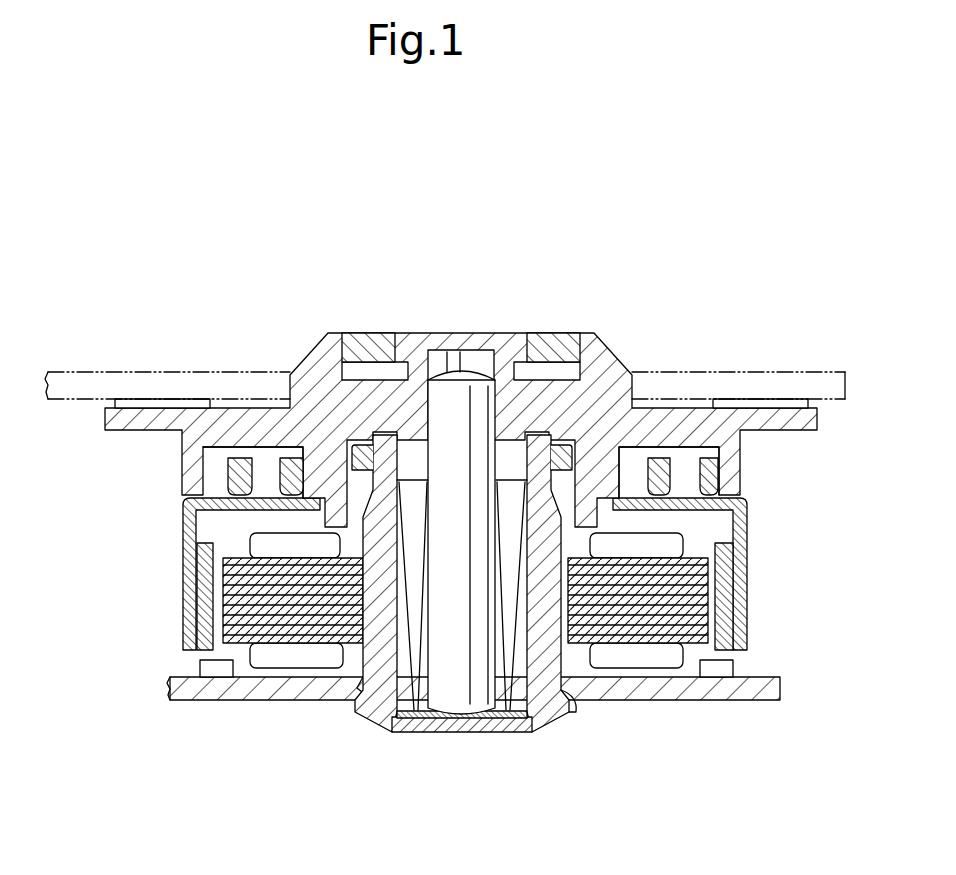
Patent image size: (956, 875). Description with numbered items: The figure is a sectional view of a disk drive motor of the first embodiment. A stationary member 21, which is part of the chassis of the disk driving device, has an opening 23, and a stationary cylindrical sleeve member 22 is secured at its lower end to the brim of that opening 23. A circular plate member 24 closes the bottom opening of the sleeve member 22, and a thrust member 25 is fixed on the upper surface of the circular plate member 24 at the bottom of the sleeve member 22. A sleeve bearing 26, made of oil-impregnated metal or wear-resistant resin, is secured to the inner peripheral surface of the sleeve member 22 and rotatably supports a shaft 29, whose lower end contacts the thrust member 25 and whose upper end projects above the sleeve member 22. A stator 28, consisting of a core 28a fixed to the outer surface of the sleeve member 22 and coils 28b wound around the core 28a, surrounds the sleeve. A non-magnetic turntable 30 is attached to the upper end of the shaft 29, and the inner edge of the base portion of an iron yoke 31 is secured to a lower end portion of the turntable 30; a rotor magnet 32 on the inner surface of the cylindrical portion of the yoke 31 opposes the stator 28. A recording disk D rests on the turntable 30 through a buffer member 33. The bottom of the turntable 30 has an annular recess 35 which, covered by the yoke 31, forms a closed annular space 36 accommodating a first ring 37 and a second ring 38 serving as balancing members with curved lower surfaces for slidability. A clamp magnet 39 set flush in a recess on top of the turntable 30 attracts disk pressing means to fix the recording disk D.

The stationary member 21 is at (740, 700).
The sleeve member 22 is at (355, 662).
The opening 23 is at (578, 694).
The circular plate member 24 is at (503, 737).
The thrust member 25 is at (443, 730).
The sleeve bearing 26 is at (417, 702).
The stator 28 is at (690, 537).
The stator core 28a is at (232, 600).
The coils 28b is at (247, 545).
The shaft 29 is at (455, 390).
The turntable 30 is at (613, 363).
The yoke 31 is at (748, 583).
The rotor magnet 32 is at (185, 624).
The buffer member 33 is at (168, 404).
The annular recess 35 is at (270, 437).
The annular space 36 is at (665, 440).
The first ring 37 is at (230, 472).
The second ring 38 is at (673, 480).
The clamp magnet 39 is at (362, 347).
The recording disk D is at (118, 368).